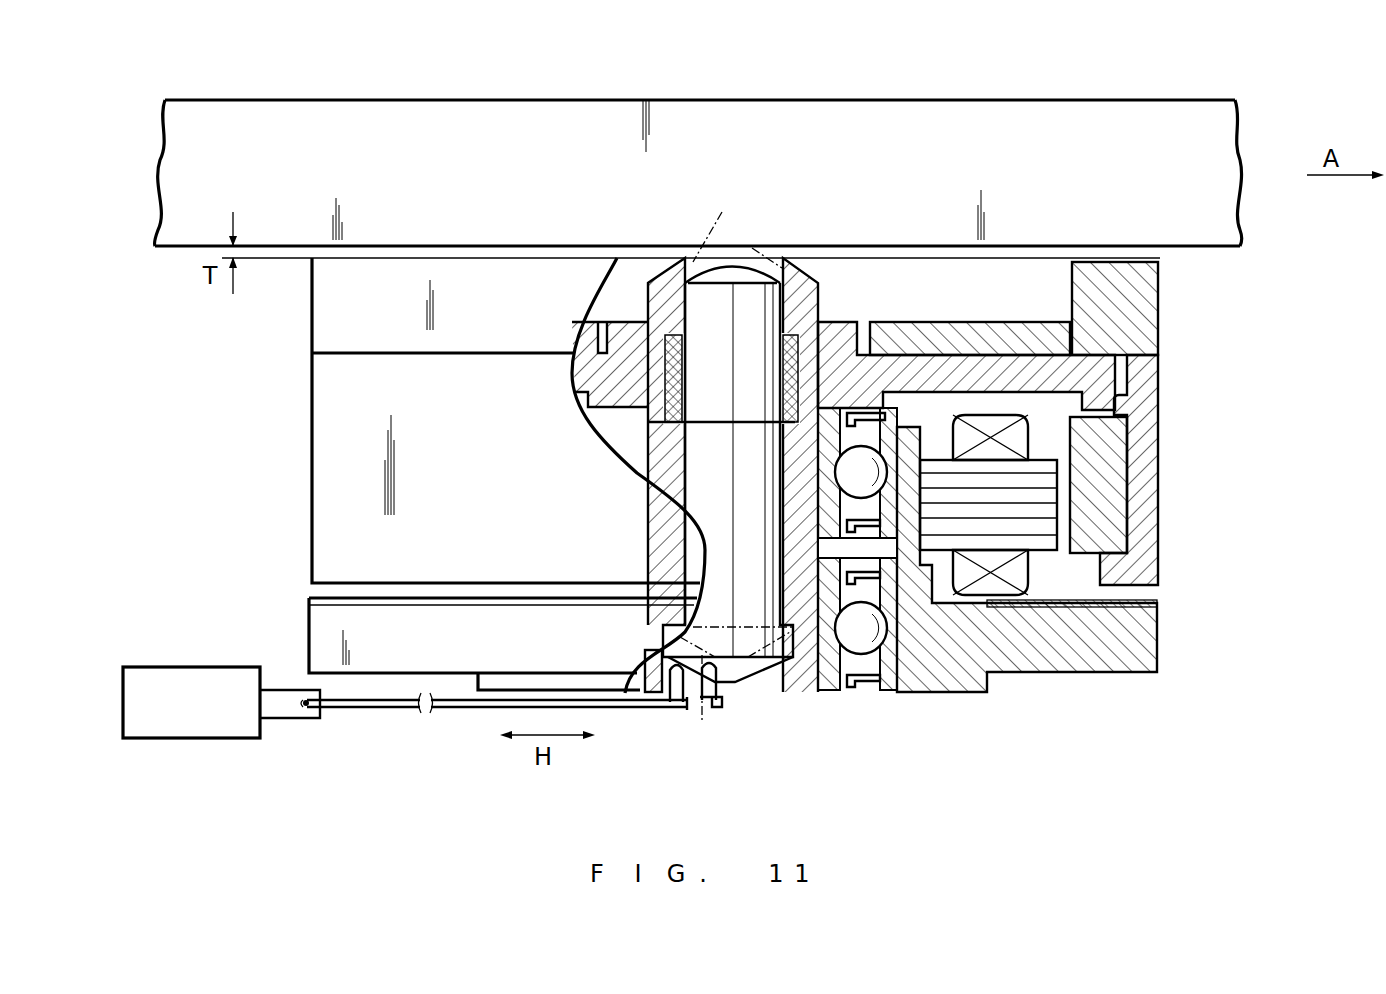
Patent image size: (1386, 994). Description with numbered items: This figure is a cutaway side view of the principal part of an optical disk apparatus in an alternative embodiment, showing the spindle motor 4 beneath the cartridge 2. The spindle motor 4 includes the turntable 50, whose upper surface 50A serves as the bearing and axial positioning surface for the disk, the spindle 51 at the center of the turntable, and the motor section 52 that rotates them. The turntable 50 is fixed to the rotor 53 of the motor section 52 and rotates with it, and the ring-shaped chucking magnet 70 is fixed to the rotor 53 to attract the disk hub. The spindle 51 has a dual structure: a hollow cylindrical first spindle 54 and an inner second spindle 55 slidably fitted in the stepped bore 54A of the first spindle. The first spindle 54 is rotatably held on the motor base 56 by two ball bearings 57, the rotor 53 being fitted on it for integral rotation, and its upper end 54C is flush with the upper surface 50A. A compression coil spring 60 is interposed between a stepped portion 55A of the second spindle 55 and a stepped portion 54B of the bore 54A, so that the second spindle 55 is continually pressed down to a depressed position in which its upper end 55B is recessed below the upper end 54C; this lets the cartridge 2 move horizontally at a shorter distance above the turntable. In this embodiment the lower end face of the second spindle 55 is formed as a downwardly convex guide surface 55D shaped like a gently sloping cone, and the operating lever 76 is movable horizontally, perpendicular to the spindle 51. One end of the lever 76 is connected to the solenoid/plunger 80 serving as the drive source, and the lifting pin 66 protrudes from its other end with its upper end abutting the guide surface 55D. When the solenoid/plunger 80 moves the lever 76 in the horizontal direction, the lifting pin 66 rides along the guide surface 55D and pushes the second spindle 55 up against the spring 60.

The cartridge 2 is at (1082, 118).
The spindle motor 4 is at (312, 532).
The turntable 50 is at (1140, 322).
The upper surface 50A is at (1130, 257).
The spindle 51 is at (815, 288).
The motor section 52 is at (1107, 533).
The rotor 53 is at (1143, 453).
The first spindle 54 is at (805, 293).
The bore 54A is at (670, 447).
The stepped portion 54B is at (577, 373).
The upper end 54C is at (657, 288).
The second spindle 55 is at (718, 418).
The stepped portion 55A is at (723, 498).
The upper end 55B is at (740, 282).
The guide surface 55D is at (745, 670).
The motor base 56 is at (1043, 657).
The ball bearings 57 is at (848, 414).
The compression coil spring 60 is at (600, 432).
The lifting pin 66 is at (680, 697).
The chucking magnet 70 is at (1007, 340).
The operating lever 76 is at (455, 712).
The solenoid/plunger 80 is at (197, 730).